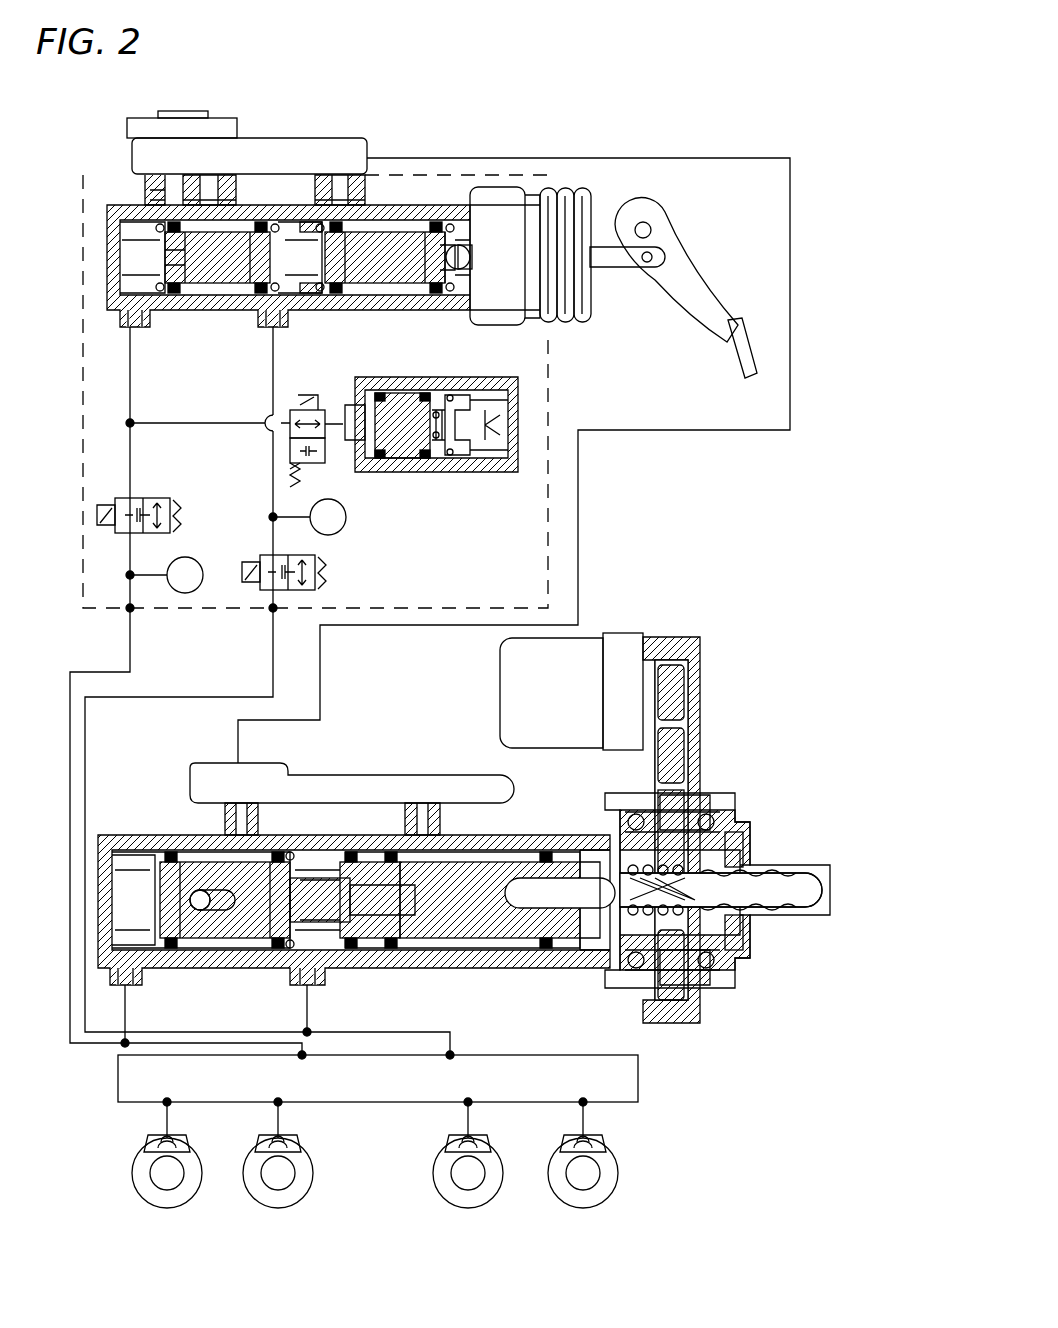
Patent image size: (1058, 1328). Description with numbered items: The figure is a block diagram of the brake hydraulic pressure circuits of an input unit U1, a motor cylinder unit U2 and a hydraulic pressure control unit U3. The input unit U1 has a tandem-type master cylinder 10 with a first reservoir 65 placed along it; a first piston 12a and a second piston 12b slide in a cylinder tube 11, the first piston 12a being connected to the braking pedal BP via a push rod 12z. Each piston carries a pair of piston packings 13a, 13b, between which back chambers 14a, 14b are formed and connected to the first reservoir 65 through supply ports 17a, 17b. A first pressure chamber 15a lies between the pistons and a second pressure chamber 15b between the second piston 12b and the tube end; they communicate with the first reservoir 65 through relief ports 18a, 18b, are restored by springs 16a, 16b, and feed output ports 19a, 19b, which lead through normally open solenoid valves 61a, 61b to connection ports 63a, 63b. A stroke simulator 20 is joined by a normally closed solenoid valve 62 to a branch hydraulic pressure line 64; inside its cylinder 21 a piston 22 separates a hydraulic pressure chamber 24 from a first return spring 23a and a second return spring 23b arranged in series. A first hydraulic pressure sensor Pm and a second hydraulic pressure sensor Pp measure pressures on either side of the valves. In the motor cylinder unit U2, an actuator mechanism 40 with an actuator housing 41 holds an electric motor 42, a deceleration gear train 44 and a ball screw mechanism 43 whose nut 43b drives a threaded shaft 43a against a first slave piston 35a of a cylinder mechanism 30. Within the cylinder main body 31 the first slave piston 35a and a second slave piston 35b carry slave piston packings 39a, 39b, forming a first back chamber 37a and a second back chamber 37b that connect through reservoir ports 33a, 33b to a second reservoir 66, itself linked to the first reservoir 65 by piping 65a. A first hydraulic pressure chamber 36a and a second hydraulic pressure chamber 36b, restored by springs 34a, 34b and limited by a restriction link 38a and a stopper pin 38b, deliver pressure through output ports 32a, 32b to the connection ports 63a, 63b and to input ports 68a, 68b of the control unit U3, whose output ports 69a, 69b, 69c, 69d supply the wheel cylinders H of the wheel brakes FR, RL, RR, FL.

The master cylinder 10 is at (420, 195).
The cylinder tube 11 is at (450, 228).
The first piston 12a is at (360, 253).
The second piston 12b is at (205, 275).
The push rod 12z is at (462, 254).
The piston packing 13a is at (260, 293).
The piston packing 13b is at (172, 293).
The back chamber 14a is at (405, 290).
The back chamber 14b is at (225, 290).
The first pressure chamber 15a is at (282, 220).
The second pressure chamber 15b is at (122, 258).
The spring 16a is at (298, 240).
The spring 16b is at (115, 271).
The supply port 17a is at (370, 205).
The supply port 17b is at (208, 190).
The relief port 18a is at (340, 195).
The relief port 18b is at (160, 190).
The output port 19a is at (292, 467).
The output port 19b is at (151, 467).
The stroke simulator 20 is at (500, 330).
The cylinder 21 is at (347, 300).
The piston 22 is at (405, 455).
The first return spring 23a is at (470, 455).
The second return spring 23b is at (438, 440).
The hydraulic pressure chamber 24 is at (375, 455).
The cylinder mechanism 30 is at (538, 788).
The cylinder main body 31 is at (552, 845).
The output port 32a is at (307, 985).
The output port 32b is at (125, 985).
The reservoir port 33a is at (428, 808).
The reservoir port 33b is at (225, 790).
The spring 34a is at (363, 827).
The spring 34b is at (115, 850).
The first slave piston 35a is at (470, 935).
The second slave piston 35b is at (262, 920).
The first hydraulic pressure chamber 36a is at (335, 865).
The second hydraulic pressure chamber 36b is at (145, 875).
The first back chamber 37a is at (440, 945).
The second back chamber 37b is at (235, 940).
The restriction link 38a is at (310, 860).
The stopper pin 38b is at (205, 935).
The slave piston packing 39a is at (290, 955).
The slave piston packing 39b is at (175, 948).
The actuator mechanism 40 is at (768, 778).
The actuator housing 41 is at (740, 828).
The electric motor 42 is at (500, 675).
The ball screw mechanism 43 is at (798, 870).
The threaded shaft 43a is at (590, 940).
The nut 43b is at (745, 940).
The deceleration gear train 44 is at (695, 740).
The normally open solenoid valve 61a is at (255, 530).
The normally open solenoid valve 61b is at (150, 498).
The normally closed solenoid valve 62 is at (318, 408).
The connection port 63a is at (270, 615).
The connection port 63b is at (132, 615).
The branch hydraulic pressure line 64 is at (130, 395).
The first reservoir 65 is at (132, 150).
The piping 65a is at (578, 512).
The second reservoir 66 is at (330, 775).
The input port 68a is at (453, 1060).
The input port 68b is at (305, 1060).
The output port 69a is at (586, 1108).
The output port 69b is at (471, 1108).
The output port 69c is at (281, 1108).
The output port 69d is at (170, 1108).
The braking pedal BP is at (746, 318).
The wheel brake FL is at (198, 1190).
The wheel brake FR is at (614, 1190).
The wheel brake RL is at (499, 1190).
The wheel brake RR is at (309, 1190).
The wheel cylinder H is at (182, 1140).
The first hydraulic pressure sensor Pm is at (307, 517).
The second hydraulic pressure sensor Pp is at (164, 575).
The input unit U1 is at (548, 375).
The motor cylinder unit U2 is at (723, 598).
The hydraulic pressure control unit U3 is at (640, 1083).